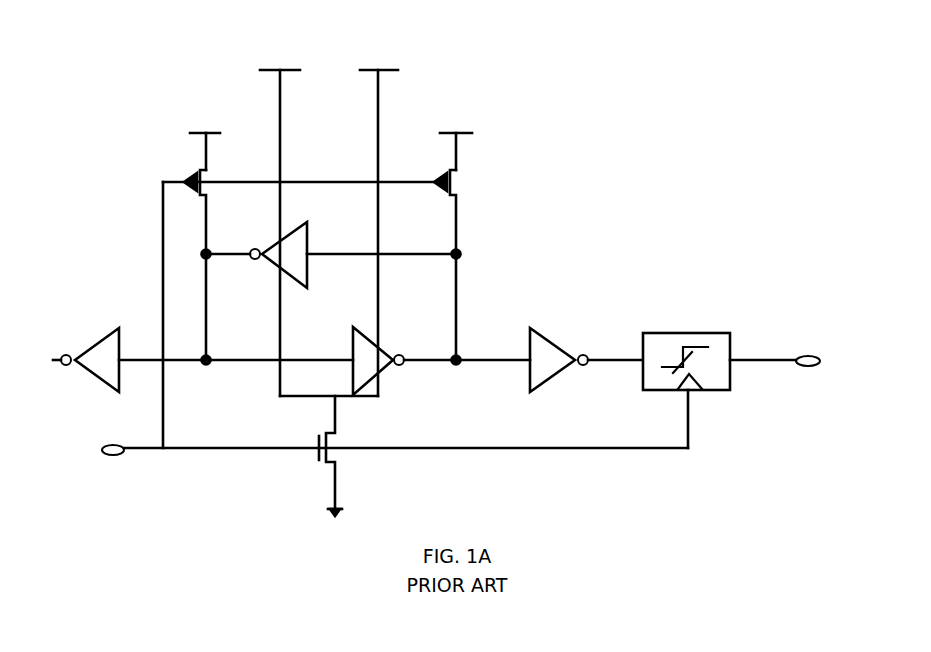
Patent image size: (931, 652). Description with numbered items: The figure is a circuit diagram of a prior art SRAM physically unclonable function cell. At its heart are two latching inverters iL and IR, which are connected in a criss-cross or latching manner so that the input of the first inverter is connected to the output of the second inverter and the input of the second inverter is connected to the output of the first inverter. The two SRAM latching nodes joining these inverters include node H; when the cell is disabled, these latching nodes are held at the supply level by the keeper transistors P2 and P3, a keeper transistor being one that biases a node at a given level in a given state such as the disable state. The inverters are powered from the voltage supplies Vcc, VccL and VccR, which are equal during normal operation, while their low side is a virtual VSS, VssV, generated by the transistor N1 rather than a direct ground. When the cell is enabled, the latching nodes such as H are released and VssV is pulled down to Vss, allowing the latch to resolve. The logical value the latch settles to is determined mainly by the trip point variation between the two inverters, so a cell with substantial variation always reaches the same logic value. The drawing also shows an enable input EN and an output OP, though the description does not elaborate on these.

The keeper transistor P2 is at (187, 203).
The keeper transistor P3 is at (453, 212).
The transistor N1 is at (340, 456).
The latching inverter IL is at (277, 261).
The latching inverter IR is at (386, 359).
The SRAM latching node H is at (214, 305).
The voltage supply Vcc is at (328, 140).
The voltage supply VccL is at (274, 221).
The voltage supply VccR is at (376, 221).
The virtual VSS VssV is at (355, 405).
The enable input EN is at (393, 442).
The output OP is at (806, 351).